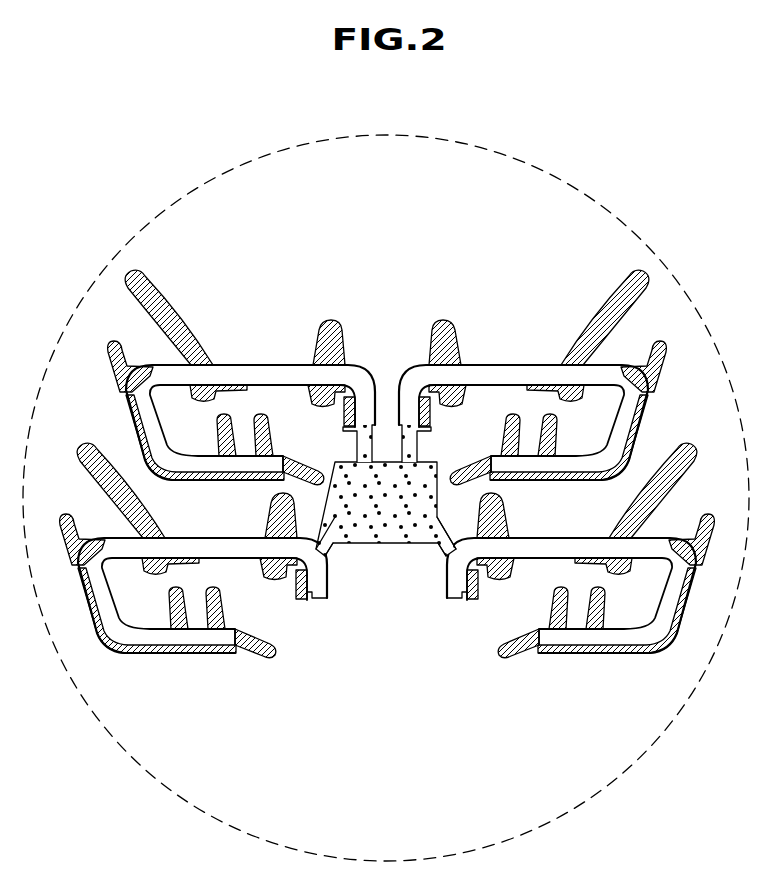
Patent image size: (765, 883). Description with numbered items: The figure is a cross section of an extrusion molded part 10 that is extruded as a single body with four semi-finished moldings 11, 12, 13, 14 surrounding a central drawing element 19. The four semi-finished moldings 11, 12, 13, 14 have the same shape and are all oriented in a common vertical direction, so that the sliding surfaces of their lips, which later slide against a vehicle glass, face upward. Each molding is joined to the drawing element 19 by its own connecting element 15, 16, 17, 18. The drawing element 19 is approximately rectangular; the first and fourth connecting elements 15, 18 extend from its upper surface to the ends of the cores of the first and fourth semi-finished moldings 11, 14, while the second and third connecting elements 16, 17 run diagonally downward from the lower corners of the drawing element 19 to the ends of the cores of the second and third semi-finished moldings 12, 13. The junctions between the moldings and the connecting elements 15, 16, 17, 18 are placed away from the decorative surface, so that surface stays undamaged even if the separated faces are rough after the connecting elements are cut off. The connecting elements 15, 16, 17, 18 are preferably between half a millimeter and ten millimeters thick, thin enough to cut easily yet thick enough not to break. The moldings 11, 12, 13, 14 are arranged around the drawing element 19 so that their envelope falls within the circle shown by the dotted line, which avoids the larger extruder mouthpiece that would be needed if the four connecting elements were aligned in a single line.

The extrusion molded part 10 is at (390, 314).
The first semi-finished molding 11 is at (263, 374).
The second semi-finished molding 12 is at (118, 623).
The third semi-finished molding 13 is at (656, 623).
The fourth semi-finished molding 14 is at (511, 374).
The first connecting element 15 is at (357, 446).
The second connecting element 16 is at (326, 556).
The third connecting element 17 is at (448, 556).
The fourth connecting element 18 is at (417, 446).
The drawing element 19 is at (383, 533).